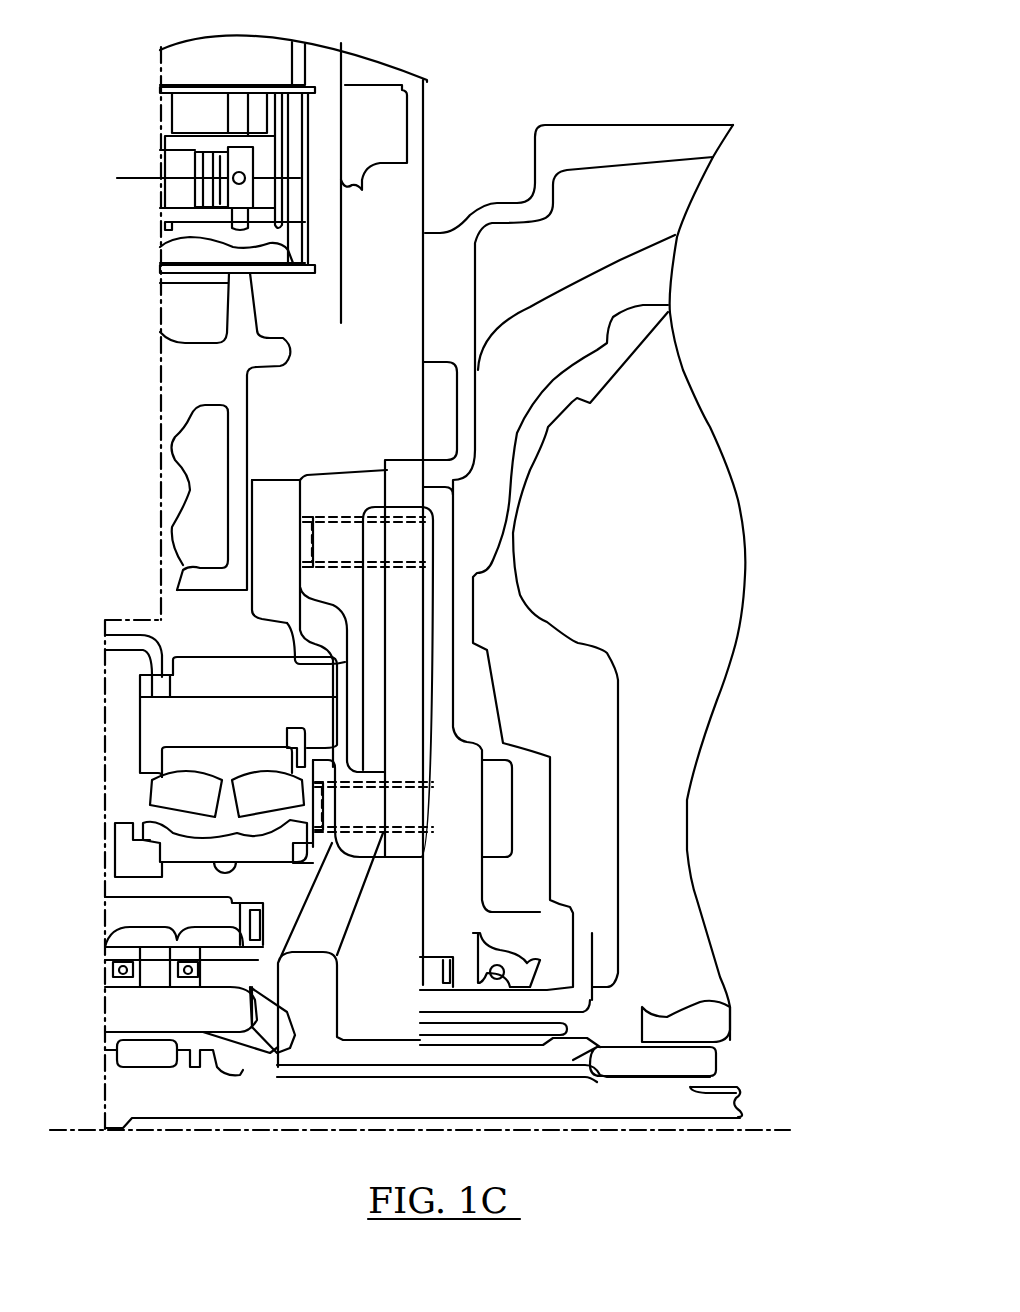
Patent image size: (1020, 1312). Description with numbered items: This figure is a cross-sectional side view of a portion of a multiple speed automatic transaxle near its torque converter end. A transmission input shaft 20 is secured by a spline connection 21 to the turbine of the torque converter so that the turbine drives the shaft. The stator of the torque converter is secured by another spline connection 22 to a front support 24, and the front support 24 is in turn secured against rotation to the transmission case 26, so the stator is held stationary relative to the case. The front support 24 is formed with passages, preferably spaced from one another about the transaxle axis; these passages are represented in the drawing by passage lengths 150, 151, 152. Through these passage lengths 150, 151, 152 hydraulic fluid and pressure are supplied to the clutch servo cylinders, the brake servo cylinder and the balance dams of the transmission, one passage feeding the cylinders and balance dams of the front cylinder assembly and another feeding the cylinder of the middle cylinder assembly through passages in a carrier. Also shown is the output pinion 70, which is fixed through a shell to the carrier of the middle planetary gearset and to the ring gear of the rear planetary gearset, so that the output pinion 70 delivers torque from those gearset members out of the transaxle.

The transmission input shaft 20 is at (335, 1112).
The spline connection 21 is at (715, 1087).
The spline connection 22 is at (662, 1043).
The front support 24 is at (325, 493).
The transmission case 26 is at (400, 473).
The output pinion 70 is at (213, 677).
The passage length 150 is at (347, 920).
The passage length 151 is at (250, 1037).
The passage length 152 is at (187, 1021).